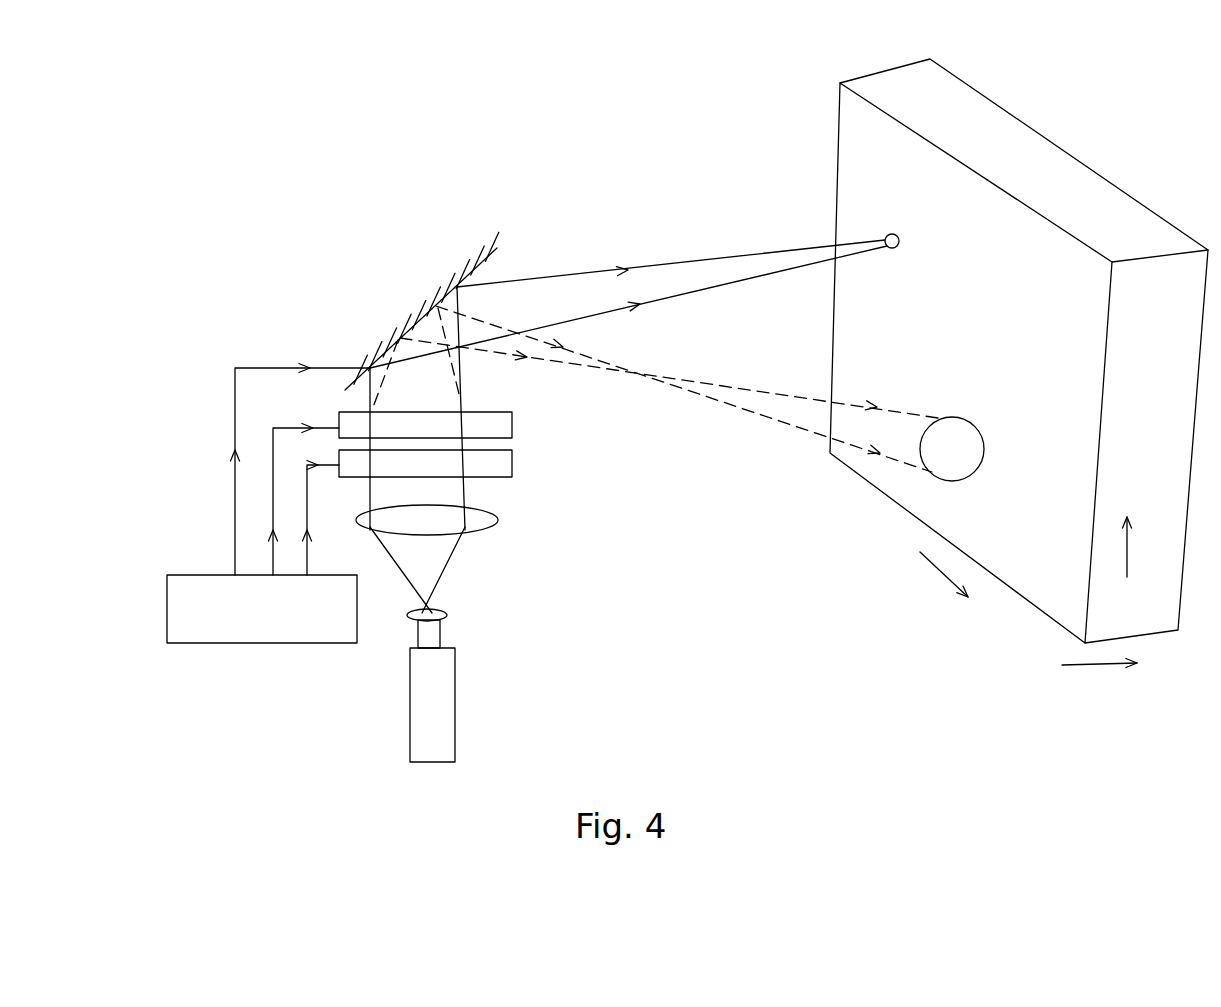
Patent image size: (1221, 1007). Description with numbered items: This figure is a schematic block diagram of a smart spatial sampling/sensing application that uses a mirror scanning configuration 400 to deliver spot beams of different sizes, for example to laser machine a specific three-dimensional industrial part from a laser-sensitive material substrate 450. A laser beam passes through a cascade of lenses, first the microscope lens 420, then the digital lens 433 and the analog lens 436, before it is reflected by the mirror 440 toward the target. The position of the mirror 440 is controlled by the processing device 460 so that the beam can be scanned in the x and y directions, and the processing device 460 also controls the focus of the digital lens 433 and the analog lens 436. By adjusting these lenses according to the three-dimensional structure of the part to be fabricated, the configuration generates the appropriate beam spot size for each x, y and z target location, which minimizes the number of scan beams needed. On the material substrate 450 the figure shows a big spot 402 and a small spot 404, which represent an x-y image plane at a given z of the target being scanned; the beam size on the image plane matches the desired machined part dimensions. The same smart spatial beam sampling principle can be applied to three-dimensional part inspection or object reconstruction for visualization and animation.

The mirror scanning configuration 400 is at (346, 195).
The big spot 402 is at (965, 417).
The small spot 404 is at (890, 233).
The microscope lens 420 is at (443, 610).
The digital lens 433 is at (508, 460).
The analog lens 436 is at (513, 418).
The mirror 440 is at (455, 262).
The material substrate 450 is at (1028, 147).
The processing device 460 is at (215, 585).